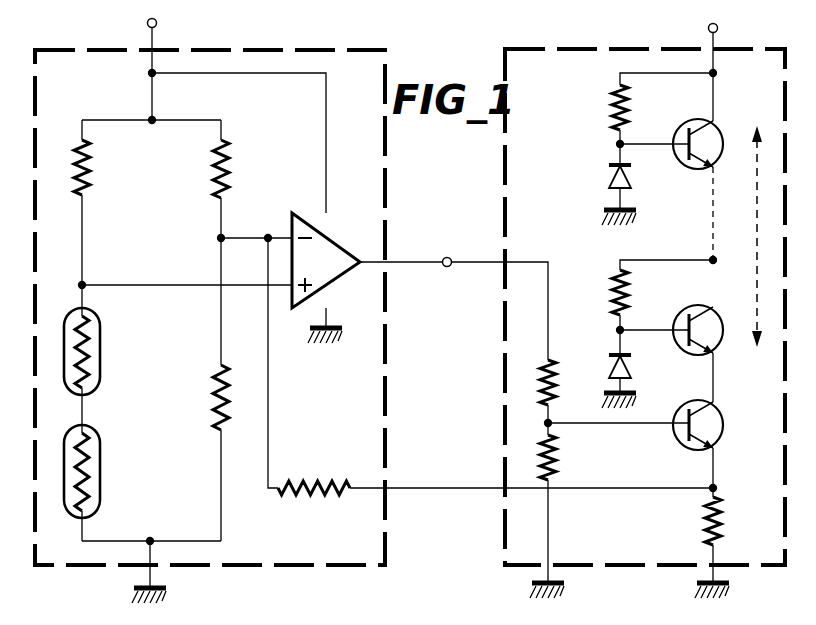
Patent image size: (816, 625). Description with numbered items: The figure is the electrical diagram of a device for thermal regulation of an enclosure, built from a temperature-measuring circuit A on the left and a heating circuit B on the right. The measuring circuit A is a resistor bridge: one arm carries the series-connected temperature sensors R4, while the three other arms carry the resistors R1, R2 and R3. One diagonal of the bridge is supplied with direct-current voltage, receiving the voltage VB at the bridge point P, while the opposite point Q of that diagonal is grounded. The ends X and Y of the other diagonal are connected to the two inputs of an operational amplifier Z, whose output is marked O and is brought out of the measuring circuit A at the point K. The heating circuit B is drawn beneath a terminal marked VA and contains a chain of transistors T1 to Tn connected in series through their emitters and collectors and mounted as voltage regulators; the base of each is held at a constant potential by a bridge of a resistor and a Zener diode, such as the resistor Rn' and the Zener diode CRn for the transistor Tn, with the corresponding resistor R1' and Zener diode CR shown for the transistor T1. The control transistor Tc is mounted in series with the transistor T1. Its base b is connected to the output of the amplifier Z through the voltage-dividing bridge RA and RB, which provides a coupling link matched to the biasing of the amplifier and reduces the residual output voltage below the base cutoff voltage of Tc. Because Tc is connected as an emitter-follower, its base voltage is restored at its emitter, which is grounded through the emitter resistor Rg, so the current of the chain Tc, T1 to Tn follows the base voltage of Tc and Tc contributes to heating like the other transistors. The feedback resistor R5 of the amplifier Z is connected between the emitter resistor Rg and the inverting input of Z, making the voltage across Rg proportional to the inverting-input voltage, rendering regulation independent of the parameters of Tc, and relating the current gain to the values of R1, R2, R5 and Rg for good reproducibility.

The temperature-measuring circuit A is at (255, 50).
The heating circuit B is at (562, 49).
The direct-current supply voltage VB is at (147, 23).
The output supply voltage terminal VA is at (718, 28).
The bridge point P is at (151, 118).
The bridge point Q is at (150, 541).
The bridge diagonal end X is at (82, 285).
The bridge diagonal end Y is at (221, 240).
The operational amplifier Z is at (326, 278).
The amplifier output O is at (359, 266).
The connection terminal K is at (448, 257).
The bridge resistor R1 is at (196, 179).
The bridge resistor R2 is at (213, 402).
The bridge resistor R3 is at (74, 164).
The temperature sensors R4 is at (99, 372).
The negative feedback resistor R5 is at (302, 495).
The bias resistor Rn' is at (639, 119).
The bias resistor of first stage R1' is at (647, 306).
The Zener diode CRn is at (607, 180).
The zener diode of first stage CR is at (608, 366).
The transistor Tn is at (724, 139).
The transistor T1 is at (723, 333).
The control transistor Tc is at (723, 425).
The base of control transistor b is at (633, 425).
The voltage-dividing bridge resistor RA is at (556, 384).
The voltage-dividing bridge resistor RB is at (557, 462).
The emitter resistor Rg is at (722, 534).